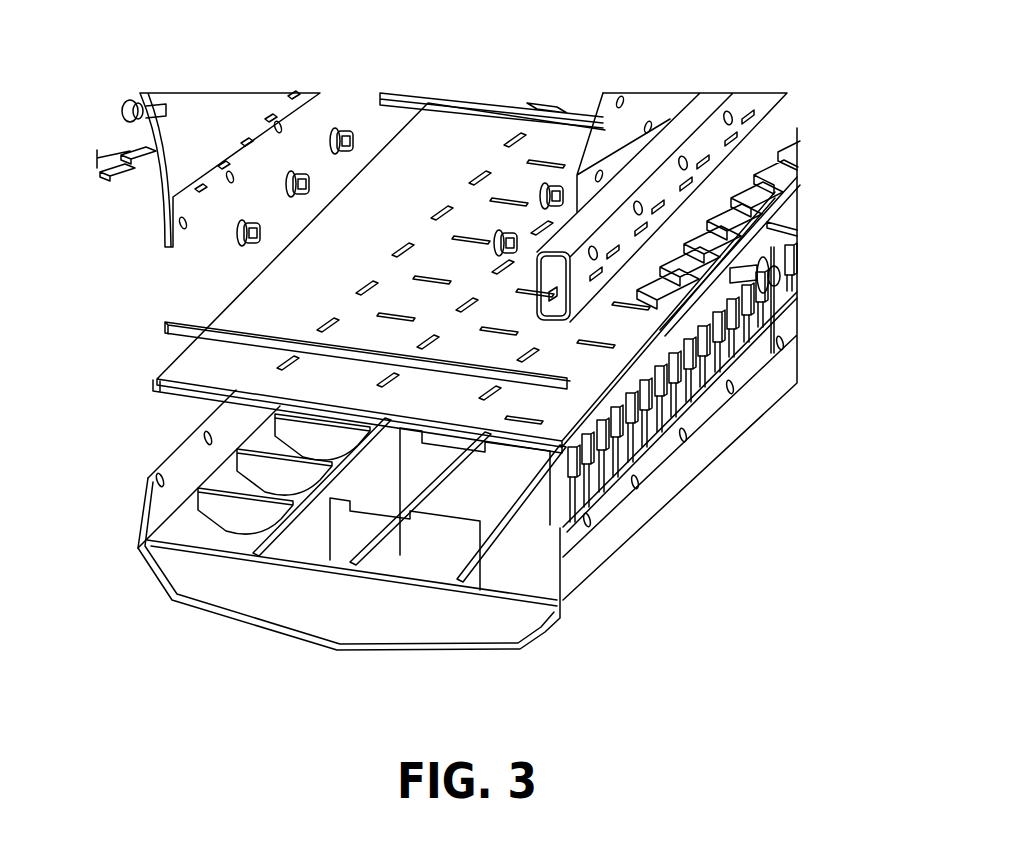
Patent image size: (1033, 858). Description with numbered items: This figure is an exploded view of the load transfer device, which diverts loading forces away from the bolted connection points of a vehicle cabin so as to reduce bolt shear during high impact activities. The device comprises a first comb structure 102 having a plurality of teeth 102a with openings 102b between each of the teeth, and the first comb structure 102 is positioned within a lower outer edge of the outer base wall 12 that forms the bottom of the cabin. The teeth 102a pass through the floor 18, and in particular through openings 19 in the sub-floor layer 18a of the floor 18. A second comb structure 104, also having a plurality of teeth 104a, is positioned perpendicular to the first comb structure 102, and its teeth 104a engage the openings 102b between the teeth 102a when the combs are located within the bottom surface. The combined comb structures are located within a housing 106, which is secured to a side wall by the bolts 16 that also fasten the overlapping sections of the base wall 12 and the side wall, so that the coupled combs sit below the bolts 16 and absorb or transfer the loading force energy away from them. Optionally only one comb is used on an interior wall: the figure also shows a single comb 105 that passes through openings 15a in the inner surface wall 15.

The outer base wall 12 is at (460, 647).
The inner surface wall 15 is at (163, 228).
The openings 15a is at (208, 180).
The bolts 16 is at (782, 282).
The floor 18 is at (157, 380).
The sub-floor layer 18a is at (235, 300).
The openings 19 is at (722, 305).
The first comb structure 102 is at (598, 473).
The teeth 102a is at (605, 433).
The openings 102b is at (612, 435).
The second comb structure 104 is at (790, 167).
The teeth 104a is at (762, 188).
The single comb 105 is at (100, 185).
The housing 106 is at (637, 150).